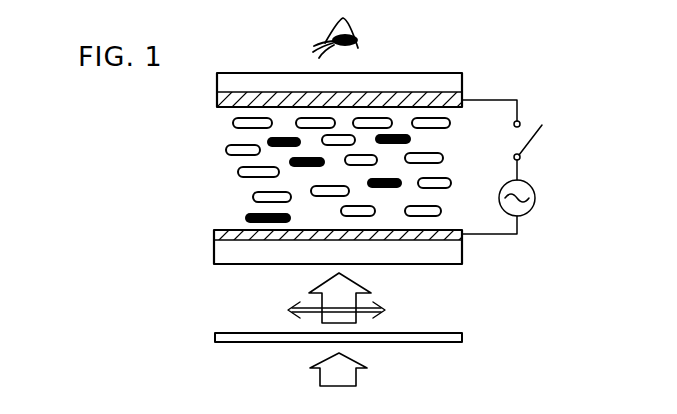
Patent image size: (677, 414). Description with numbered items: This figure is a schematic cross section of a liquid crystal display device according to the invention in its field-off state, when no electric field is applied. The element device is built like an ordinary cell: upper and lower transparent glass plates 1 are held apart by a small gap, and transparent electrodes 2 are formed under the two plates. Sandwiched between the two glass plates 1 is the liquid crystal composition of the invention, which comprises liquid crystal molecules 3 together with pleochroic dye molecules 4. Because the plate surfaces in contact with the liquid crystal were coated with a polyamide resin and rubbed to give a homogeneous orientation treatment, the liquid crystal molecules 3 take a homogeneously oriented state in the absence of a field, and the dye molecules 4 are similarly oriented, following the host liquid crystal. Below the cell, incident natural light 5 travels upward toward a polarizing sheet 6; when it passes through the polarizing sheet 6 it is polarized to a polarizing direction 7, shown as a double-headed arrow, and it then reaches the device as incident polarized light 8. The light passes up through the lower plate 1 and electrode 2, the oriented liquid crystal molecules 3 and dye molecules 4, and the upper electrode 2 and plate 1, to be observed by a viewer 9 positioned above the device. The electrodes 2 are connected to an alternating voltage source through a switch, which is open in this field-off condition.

The transparent glass plate 1 is at (217, 84).
The transparent electrode 2 is at (217, 96).
The liquid crystal molecules 3 is at (238, 171).
The pleochroic dye molecules 4 is at (245, 218).
The incident natural light 5 is at (316, 360).
The polarizing sheet 6 is at (215, 341).
The polarizing direction 7 is at (290, 307).
The incident polarized light 8 is at (316, 286).
The viewer 9 is at (358, 37).